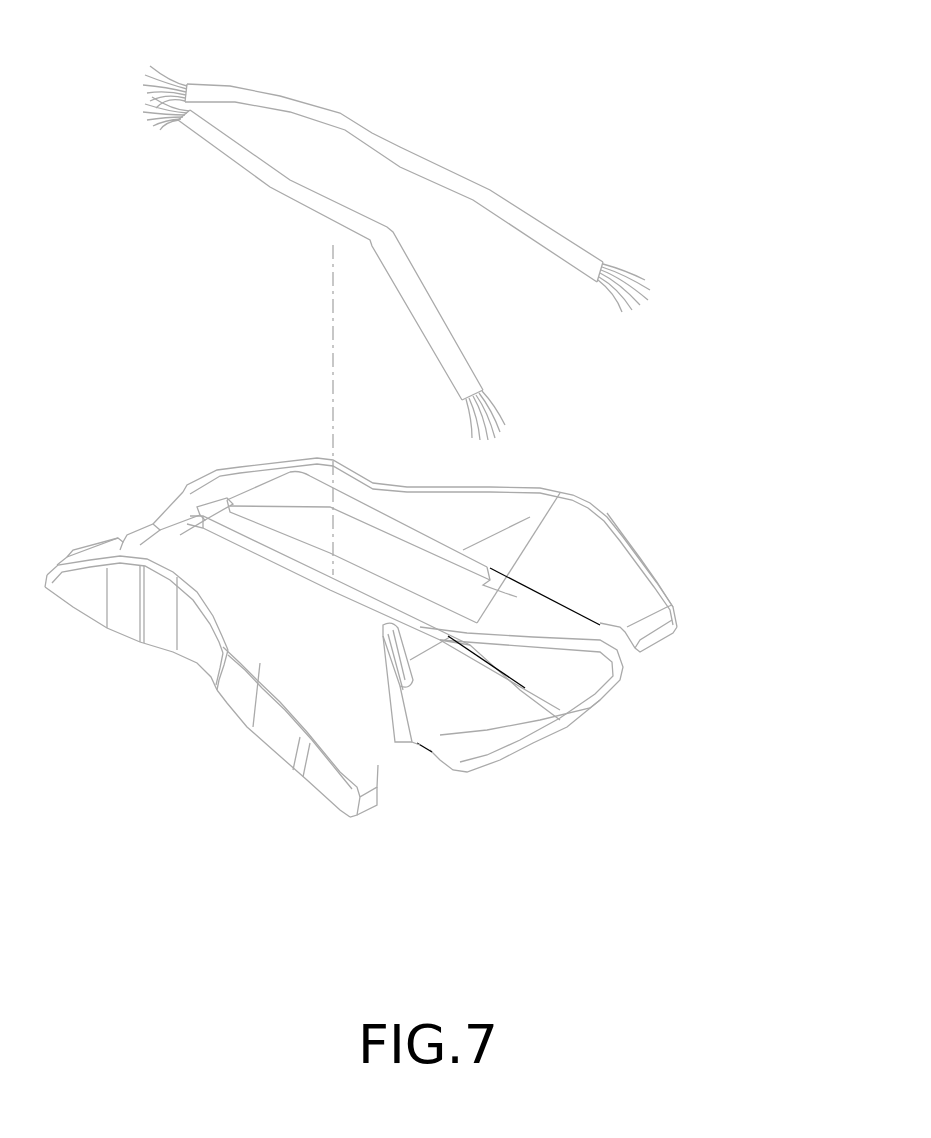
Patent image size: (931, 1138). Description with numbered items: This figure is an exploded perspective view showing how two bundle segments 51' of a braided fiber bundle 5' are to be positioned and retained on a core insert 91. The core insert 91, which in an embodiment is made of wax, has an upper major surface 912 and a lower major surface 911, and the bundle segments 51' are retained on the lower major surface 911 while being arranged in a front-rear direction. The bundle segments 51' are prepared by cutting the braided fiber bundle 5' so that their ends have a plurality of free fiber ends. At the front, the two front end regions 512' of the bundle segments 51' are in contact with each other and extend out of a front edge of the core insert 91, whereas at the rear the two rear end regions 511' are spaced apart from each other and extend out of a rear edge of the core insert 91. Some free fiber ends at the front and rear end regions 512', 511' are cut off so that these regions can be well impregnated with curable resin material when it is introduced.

The braided fiber bundle 5' is at (394, 221).
The bundle segments 51' is at (390, 242).
The rear end regions 511' is at (562, 315).
The front end regions 512' is at (187, 98).
The core insert 91 is at (640, 697).
The lower major surface 911 is at (633, 582).
The upper major surface 912 is at (418, 743).